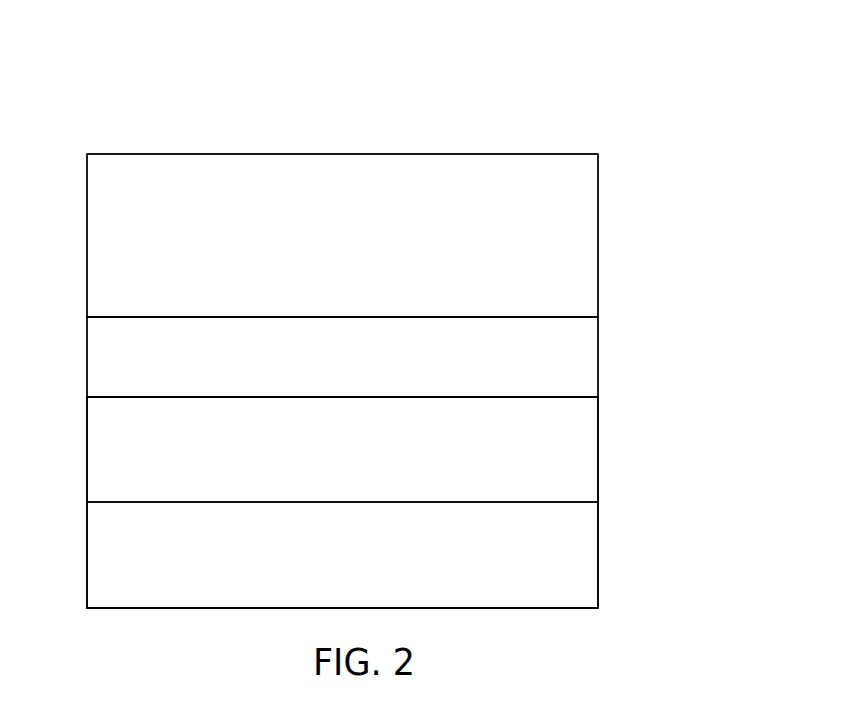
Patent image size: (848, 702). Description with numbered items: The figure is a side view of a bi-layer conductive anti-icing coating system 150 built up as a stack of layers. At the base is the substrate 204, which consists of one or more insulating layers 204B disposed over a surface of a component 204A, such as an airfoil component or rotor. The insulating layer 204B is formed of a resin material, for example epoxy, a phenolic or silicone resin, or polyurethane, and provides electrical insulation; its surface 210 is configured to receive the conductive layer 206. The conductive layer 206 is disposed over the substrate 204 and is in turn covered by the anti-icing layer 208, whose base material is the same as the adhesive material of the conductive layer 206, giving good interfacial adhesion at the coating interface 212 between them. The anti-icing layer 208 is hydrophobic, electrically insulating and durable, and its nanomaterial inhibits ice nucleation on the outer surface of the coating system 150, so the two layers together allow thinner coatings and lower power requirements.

The conductive anti-icing coating system 150 is at (127, 79).
The anti-icing layer 208 is at (583, 217).
The conductive layer 206 is at (583, 356).
The substrate 204 is at (741, 396).
The component 204A is at (585, 562).
The insulating layer 204B is at (583, 457).
The coating interface 212 is at (191, 315).
The surface 210 is at (257, 399).